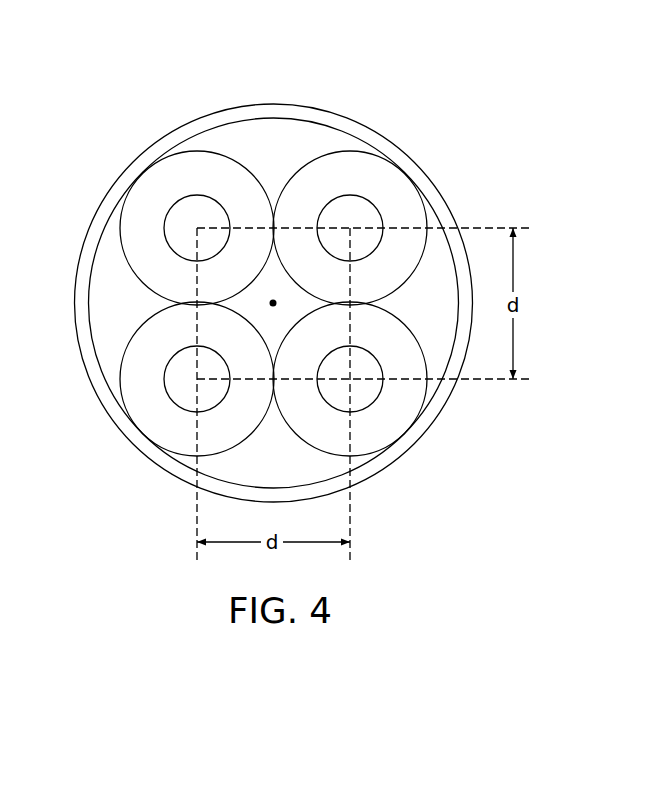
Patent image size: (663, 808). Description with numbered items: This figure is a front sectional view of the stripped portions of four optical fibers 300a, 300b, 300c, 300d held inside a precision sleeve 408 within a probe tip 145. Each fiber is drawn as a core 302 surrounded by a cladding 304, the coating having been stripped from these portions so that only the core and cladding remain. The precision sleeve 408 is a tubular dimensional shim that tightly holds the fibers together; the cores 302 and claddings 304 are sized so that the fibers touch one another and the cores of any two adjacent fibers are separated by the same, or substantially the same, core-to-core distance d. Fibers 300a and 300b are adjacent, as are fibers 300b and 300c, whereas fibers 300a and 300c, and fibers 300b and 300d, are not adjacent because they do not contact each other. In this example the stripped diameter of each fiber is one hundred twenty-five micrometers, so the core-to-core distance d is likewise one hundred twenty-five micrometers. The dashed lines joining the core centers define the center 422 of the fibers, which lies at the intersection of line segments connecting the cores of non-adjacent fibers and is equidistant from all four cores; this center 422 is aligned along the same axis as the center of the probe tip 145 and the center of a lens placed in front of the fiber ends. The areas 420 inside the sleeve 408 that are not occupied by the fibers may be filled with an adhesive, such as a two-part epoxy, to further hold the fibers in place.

The probe tip 145 is at (448, 70).
The precision sleeve 408 is at (432, 195).
The areas not occupied by fibers 420 is at (117, 297).
The fiber 300a is at (154, 184).
The fiber 300b is at (333, 148).
The fiber 300c is at (430, 387).
The fiber 300d is at (188, 458).
The cladding 304 is at (147, 186).
The core 302 is at (163, 230).
The center of fibers 422 is at (273, 303).